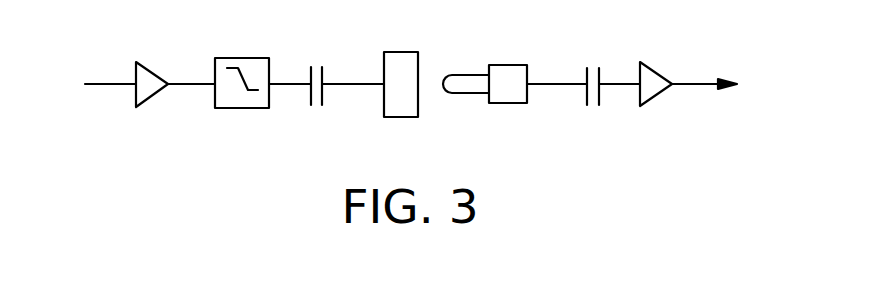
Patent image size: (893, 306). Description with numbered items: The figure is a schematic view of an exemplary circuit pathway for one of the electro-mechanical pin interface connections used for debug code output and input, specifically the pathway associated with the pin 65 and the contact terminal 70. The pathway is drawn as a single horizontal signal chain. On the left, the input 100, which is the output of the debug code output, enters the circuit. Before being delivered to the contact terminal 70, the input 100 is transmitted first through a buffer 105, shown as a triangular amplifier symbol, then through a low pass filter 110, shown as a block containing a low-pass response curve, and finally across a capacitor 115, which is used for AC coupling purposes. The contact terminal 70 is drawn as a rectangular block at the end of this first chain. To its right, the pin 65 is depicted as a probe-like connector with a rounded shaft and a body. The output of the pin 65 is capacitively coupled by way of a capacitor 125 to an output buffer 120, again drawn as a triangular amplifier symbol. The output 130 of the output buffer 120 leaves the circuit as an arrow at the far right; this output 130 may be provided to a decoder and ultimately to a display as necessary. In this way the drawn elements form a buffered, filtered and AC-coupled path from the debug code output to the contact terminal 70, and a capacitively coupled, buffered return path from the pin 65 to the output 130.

The input 100 is at (93, 82).
The buffer 105 is at (158, 77).
The low pass filter 110 is at (259, 73).
The capacitor 115 is at (325, 62).
The contact terminal 70 is at (401, 63).
The pin 65 is at (502, 78).
The capacitor 125 is at (598, 62).
The output buffer 120 is at (656, 77).
The output 130 is at (715, 78).